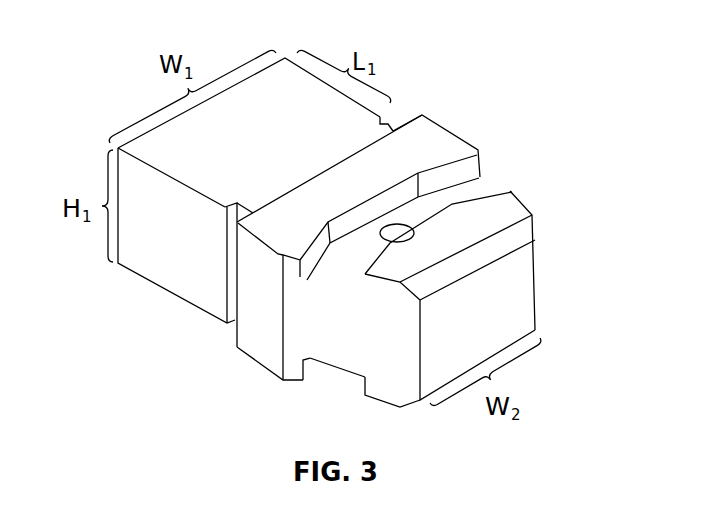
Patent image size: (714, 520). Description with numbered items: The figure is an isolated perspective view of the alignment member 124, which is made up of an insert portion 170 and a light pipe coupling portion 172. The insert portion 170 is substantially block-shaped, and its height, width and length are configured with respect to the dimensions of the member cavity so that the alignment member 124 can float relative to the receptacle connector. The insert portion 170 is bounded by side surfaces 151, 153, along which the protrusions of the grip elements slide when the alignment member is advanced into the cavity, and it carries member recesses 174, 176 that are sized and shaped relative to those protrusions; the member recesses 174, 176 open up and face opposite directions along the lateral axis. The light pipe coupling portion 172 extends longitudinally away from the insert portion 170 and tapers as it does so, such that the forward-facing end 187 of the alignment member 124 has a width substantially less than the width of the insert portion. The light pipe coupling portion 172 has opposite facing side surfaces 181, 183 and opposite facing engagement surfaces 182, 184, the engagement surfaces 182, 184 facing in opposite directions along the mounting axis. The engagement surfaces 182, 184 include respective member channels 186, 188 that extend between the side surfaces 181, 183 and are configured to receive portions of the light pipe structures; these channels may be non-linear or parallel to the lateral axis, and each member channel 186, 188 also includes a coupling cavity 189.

The alignment member 124 is at (443, 42).
The side surface 151 is at (171, 197).
The side surface 153 is at (331, 40).
The insert portion 170 is at (267, 117).
The light pipe coupling portion 172 is at (337, 333).
The member recess 174 is at (215, 263).
The member recess 176 is at (411, 104).
The side surface 181 is at (323, 301).
The engagement surface 182 is at (416, 230).
The side surface 183 is at (561, 268).
The engagement surface 184 is at (250, 376).
The member channel 186 is at (509, 167).
The forward-facing end 187 is at (490, 298).
The member channel 188 is at (352, 393).
The coupling cavity 189 is at (407, 218).